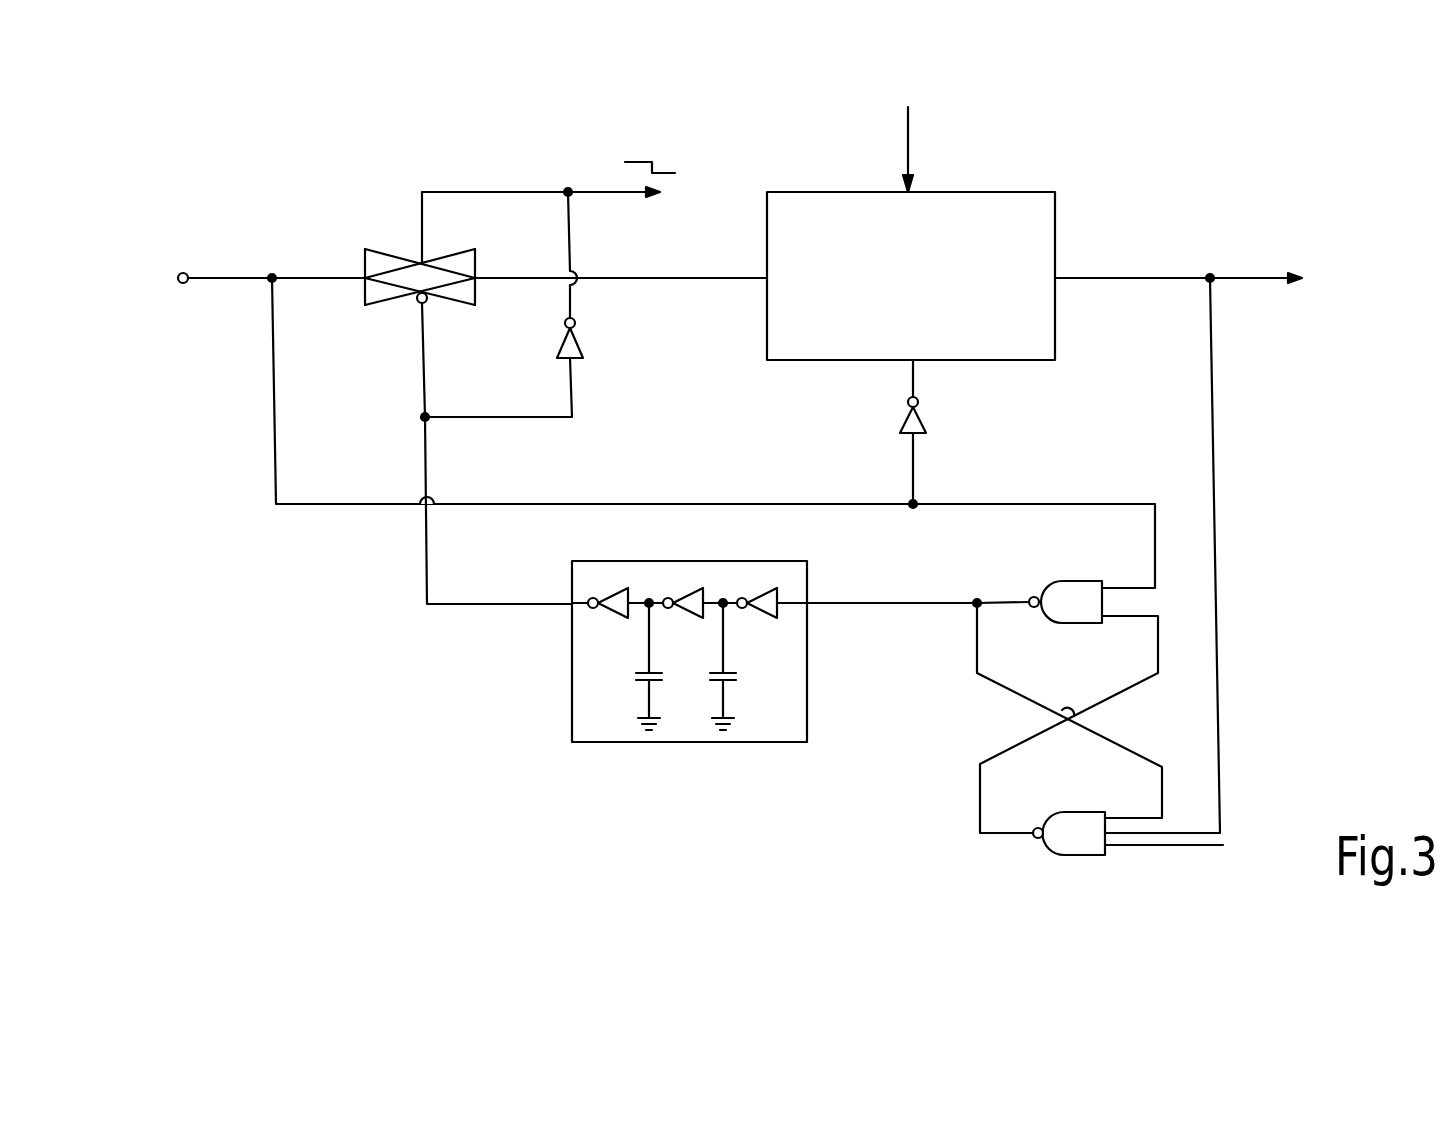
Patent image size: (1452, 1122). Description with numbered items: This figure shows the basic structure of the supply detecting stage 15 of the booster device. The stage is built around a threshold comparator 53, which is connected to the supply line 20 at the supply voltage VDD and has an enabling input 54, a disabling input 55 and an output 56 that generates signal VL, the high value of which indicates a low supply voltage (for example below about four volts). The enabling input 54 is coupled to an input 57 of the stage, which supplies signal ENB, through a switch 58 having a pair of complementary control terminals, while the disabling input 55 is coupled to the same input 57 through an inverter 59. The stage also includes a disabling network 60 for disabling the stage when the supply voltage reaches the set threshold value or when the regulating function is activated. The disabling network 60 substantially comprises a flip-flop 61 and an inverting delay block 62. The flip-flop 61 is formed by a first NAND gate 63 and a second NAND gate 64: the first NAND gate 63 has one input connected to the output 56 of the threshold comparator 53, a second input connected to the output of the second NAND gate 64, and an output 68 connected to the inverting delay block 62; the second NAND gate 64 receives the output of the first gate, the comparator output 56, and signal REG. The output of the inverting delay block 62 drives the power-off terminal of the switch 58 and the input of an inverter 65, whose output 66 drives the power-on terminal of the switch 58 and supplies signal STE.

The supply detecting stage 15 is at (1295, 525).
The supply line 20 is at (902, 157).
The threshold comparator 53 is at (1045, 225).
The enabling input 54 is at (750, 280).
The disabling input 55 is at (915, 370).
The output 56 is at (1073, 282).
The input 57 is at (183, 284).
The switch 58 is at (388, 302).
The inverter 59 is at (925, 425).
The disabling network 60 is at (918, 690).
The flip-flop 61 is at (1016, 575).
The inverting delay block 62 is at (795, 583).
The first NAND gate 63 is at (1072, 590).
The second NAND gate 64 is at (1072, 825).
The inverter 65 is at (586, 350).
The output 66 is at (593, 194).
The output 68 is at (983, 575).